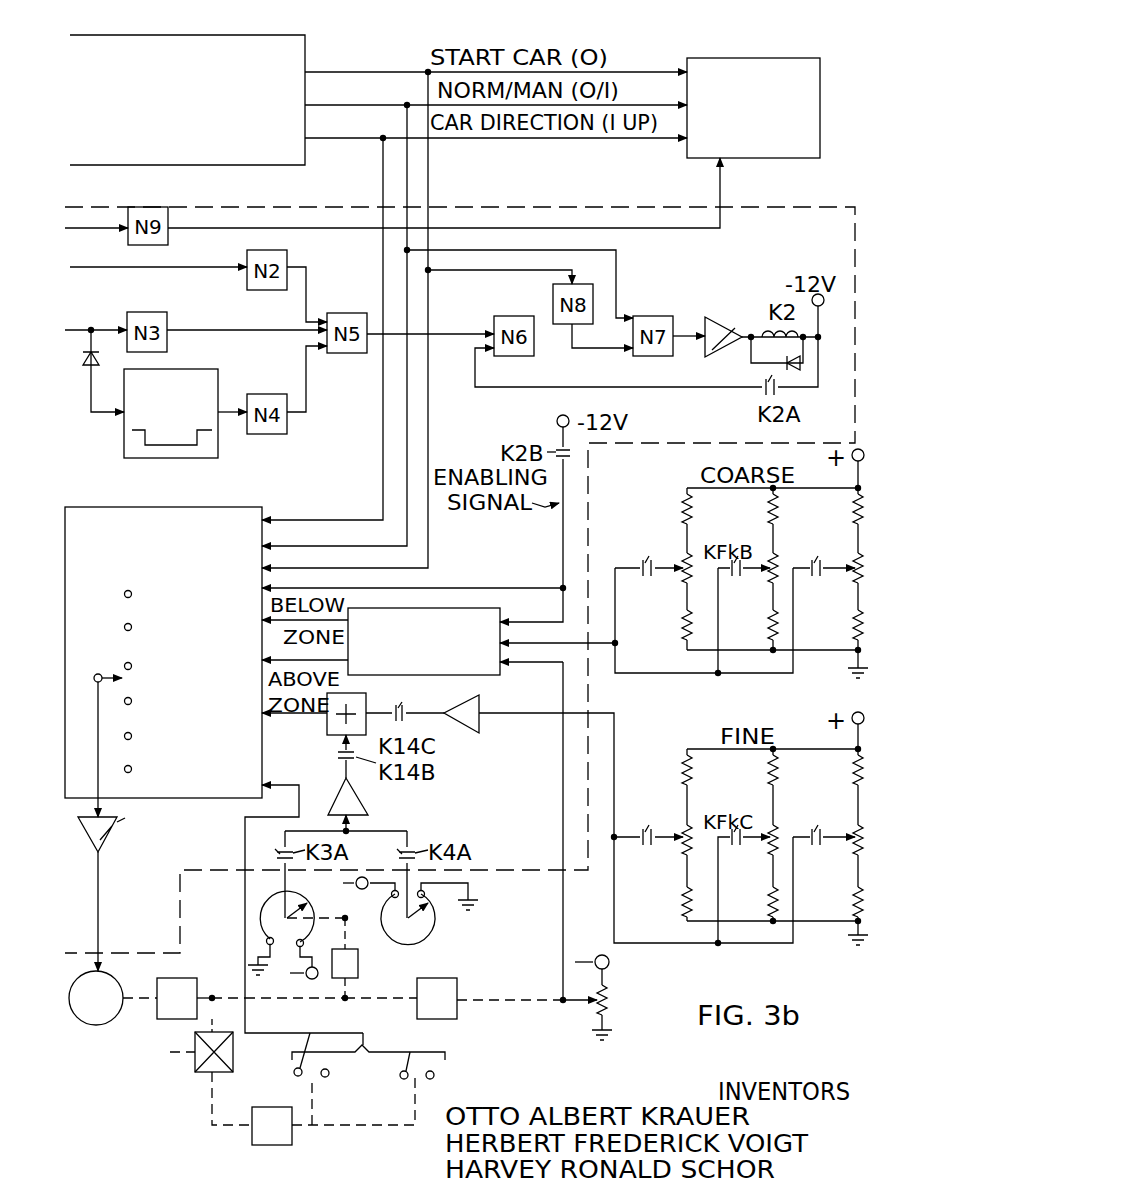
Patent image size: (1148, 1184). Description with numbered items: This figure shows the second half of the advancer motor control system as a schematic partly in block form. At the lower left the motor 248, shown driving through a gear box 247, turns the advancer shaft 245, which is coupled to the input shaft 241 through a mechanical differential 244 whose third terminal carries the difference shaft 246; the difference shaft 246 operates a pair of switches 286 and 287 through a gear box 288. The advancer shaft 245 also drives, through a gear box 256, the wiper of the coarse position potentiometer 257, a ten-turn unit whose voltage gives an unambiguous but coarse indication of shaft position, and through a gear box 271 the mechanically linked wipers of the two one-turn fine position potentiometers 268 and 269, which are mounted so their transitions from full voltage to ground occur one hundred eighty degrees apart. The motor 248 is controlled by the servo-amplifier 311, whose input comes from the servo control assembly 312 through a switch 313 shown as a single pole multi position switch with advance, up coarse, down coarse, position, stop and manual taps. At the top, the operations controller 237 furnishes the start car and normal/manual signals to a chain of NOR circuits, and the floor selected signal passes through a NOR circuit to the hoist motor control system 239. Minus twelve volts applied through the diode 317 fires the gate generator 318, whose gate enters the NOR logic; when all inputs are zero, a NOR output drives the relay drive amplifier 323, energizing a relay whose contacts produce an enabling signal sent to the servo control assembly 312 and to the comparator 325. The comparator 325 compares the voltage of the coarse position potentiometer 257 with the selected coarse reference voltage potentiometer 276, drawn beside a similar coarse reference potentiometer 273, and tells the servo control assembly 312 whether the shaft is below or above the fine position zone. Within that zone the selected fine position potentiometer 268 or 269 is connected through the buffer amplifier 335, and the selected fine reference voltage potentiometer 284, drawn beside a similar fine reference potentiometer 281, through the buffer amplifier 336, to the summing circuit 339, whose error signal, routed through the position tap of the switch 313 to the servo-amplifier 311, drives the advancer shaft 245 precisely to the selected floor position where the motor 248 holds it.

The operations controller 237 is at (270, 33).
The hoist motor control system 239 is at (820, 122).
The diode 317 is at (91, 371).
The gate generator 318 is at (160, 369).
The servo control assembly 312 is at (195, 507).
The switch 313 is at (106, 675).
The servo-amplifier 311 is at (105, 838).
The relay drive amplifier 323 is at (720, 335).
The comparator 325 is at (467, 675).
The buffer amplifier 335 is at (368, 805).
The buffer amplifier 336 is at (479, 730).
The summing circuit 339 is at (327, 724).
The coarse potentiometer KF1B 273 is at (680, 571).
The coarse reference voltage potentiometer 276 is at (854, 571).
The fine potentiometer KF1C 281 is at (680, 840).
The fine reference voltage potentiometer 284 is at (854, 840).
The fine position potentiometer 268 is at (262, 908).
The fine position potentiometer 269 is at (432, 928).
The gear box 271 is at (358, 965).
The gear unit G 247 is at (172, 978).
The advancer shaft 245 is at (222, 995).
The motor 248 is at (82, 1020).
The input shaft 241 is at (188, 1055).
The mechanical differential 244 is at (195, 1060).
The difference shaft 246 is at (210, 1095).
The gear box 288 is at (252, 1135).
The switch 286 is at (307, 1042).
The switch 287 is at (408, 1053).
The gear box 256 is at (457, 990).
The coarse position potentiometer 257 is at (597, 1004).